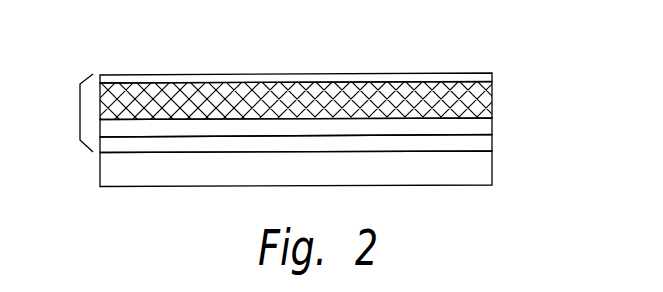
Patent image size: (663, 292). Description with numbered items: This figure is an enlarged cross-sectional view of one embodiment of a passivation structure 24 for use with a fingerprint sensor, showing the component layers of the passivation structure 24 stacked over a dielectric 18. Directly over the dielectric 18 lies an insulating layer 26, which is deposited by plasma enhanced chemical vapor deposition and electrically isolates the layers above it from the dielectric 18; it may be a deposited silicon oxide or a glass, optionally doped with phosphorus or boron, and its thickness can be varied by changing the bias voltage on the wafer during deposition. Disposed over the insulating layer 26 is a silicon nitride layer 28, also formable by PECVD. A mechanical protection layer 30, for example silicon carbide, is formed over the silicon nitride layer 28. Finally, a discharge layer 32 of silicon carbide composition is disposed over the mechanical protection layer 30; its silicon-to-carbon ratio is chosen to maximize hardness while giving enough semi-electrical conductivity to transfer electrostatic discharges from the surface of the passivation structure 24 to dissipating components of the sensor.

The dielectric 18 is at (483, 165).
The passivation structure 24 is at (80, 115).
The insulating layer 26 is at (482, 142).
The silicon nitride layer 28 is at (485, 125).
The mechanical protection layer 30 is at (490, 97).
The discharge layer 32 is at (489, 78).